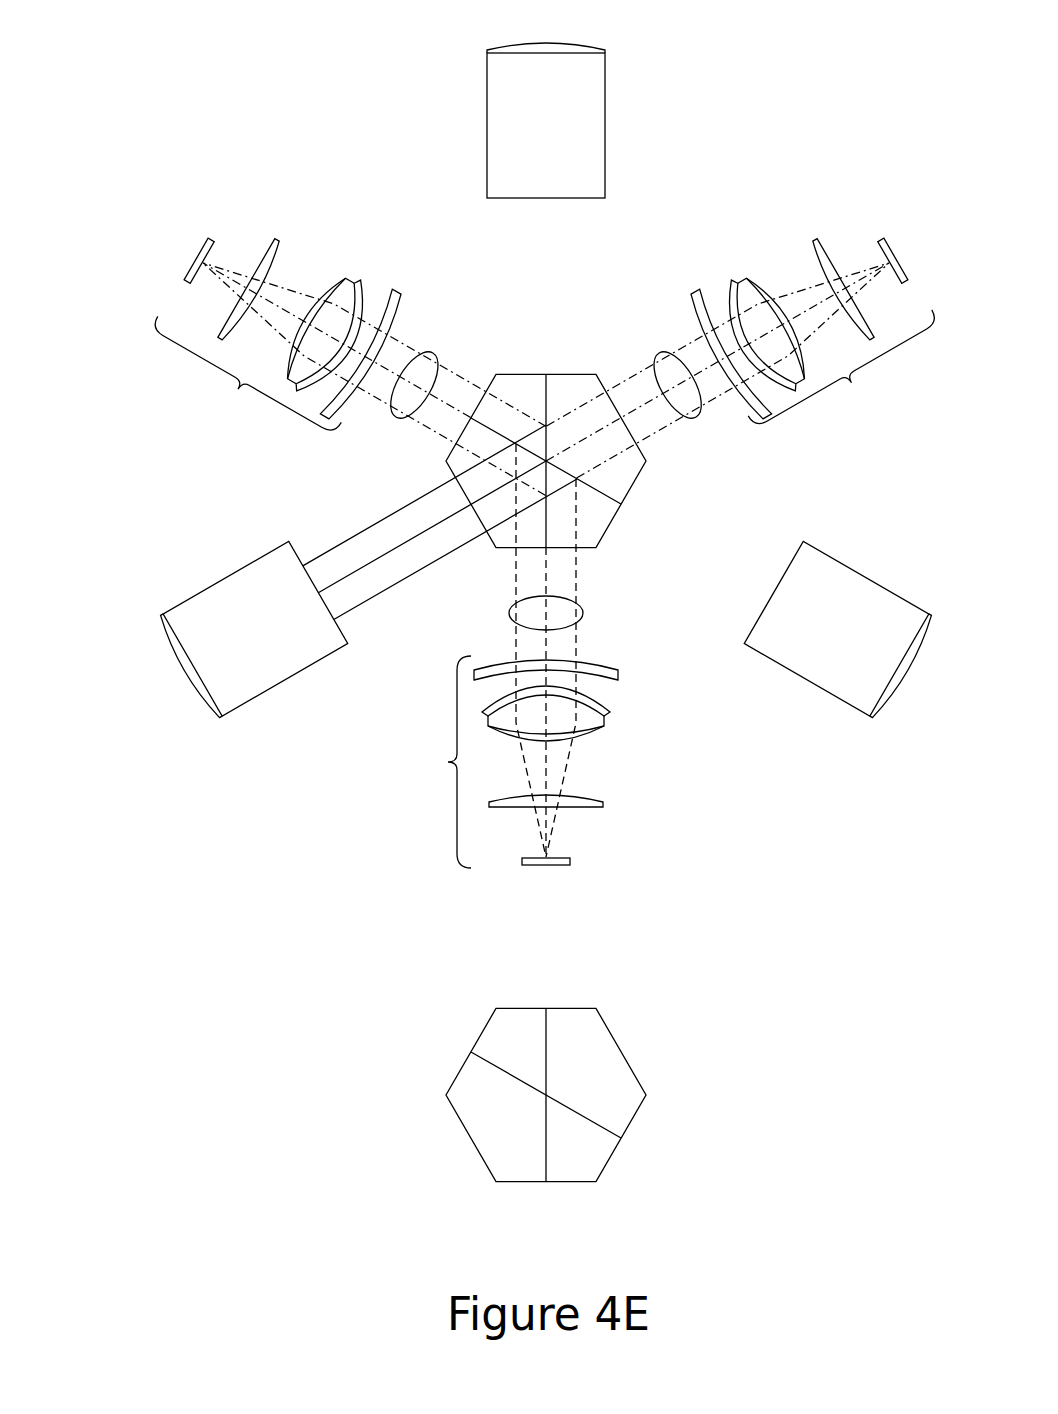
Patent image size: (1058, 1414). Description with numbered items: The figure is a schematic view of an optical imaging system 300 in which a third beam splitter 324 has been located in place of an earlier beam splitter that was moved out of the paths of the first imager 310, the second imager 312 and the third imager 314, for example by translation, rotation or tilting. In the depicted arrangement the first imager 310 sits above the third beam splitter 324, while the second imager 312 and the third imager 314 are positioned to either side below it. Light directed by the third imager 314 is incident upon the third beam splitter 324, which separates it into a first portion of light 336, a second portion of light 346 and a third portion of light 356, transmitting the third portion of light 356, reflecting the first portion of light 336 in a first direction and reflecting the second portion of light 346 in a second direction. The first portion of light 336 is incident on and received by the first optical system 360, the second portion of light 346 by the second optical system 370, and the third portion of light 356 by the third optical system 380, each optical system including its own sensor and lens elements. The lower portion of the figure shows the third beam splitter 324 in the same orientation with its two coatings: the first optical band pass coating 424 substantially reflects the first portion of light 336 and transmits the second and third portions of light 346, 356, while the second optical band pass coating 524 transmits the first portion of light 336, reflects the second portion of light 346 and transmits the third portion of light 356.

The optical imaging system 300 is at (138, 70).
The first imager 310 is at (605, 127).
The second imager 312 is at (865, 577).
The third imager 314 is at (227, 577).
The third beam splitter 324 is at (633, 482).
The first portion of light 336 is at (508, 612).
The second portion of light 346 is at (437, 357).
The third portion of light 356 is at (657, 357).
The first optical system 360 is at (448, 762).
The second optical system 370 is at (361, 346).
The third optical system 380 is at (737, 342).
The first optical band pass coating 424 is at (587, 1120).
The second optical band pass coating 524 is at (548, 1035).